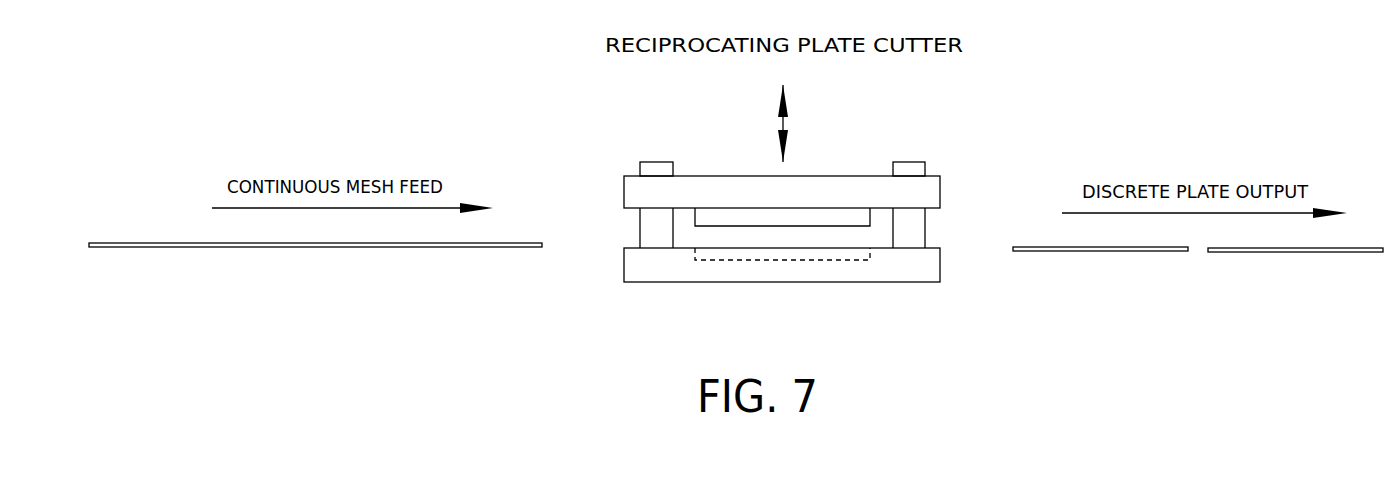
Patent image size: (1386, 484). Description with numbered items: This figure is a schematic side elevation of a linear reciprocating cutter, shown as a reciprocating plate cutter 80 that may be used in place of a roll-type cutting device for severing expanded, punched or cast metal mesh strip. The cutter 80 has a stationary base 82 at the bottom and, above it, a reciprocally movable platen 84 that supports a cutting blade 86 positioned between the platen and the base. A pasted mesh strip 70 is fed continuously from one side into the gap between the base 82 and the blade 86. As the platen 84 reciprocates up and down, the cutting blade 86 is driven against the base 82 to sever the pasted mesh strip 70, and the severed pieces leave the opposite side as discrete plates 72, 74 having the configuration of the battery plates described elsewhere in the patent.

The pasted mesh strip 70 is at (335, 247).
The plate 72 is at (1123, 252).
The plate 74 is at (1277, 252).
The reciprocating plate cutter 80 is at (786, 204).
The stationary base 82 is at (873, 282).
The reciprocally movable platen 84 is at (848, 176).
The cutting blade 86 is at (695, 217).